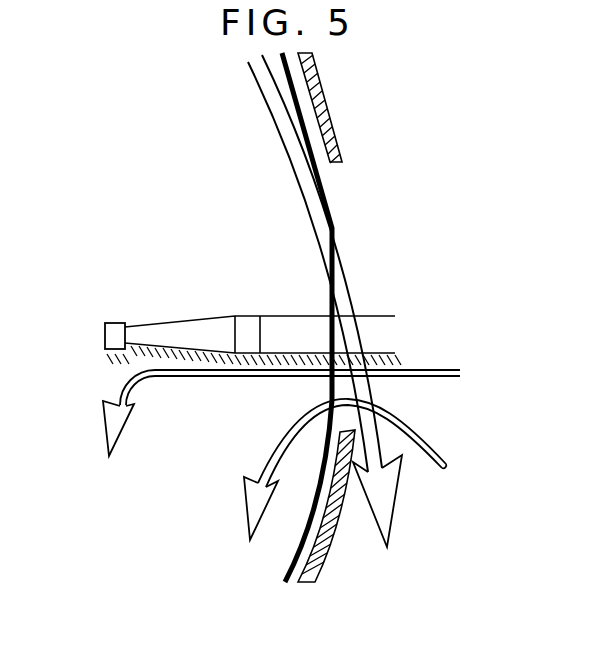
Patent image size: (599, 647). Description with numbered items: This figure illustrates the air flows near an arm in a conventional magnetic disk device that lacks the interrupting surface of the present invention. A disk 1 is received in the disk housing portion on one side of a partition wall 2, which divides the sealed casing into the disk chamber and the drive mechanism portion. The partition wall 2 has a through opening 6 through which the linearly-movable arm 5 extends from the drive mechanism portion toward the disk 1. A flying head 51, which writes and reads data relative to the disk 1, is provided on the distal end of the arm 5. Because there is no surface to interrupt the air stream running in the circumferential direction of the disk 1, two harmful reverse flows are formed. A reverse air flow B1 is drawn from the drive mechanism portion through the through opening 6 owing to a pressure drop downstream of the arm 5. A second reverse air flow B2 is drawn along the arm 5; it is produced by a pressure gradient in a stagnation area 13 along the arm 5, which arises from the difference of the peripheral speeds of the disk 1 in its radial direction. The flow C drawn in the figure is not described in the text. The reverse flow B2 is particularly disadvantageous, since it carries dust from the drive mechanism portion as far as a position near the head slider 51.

The disk 1 is at (223, 132).
The partition wall 2 is at (342, 143).
The arm 5 is at (297, 325).
The through opening 6 is at (342, 202).
The stagnation area 13 is at (210, 357).
The flying head 51 is at (105, 327).
The reverse air flow B1 is at (338, 487).
The reverse air flow B2 is at (122, 434).
The flow C is at (377, 521).